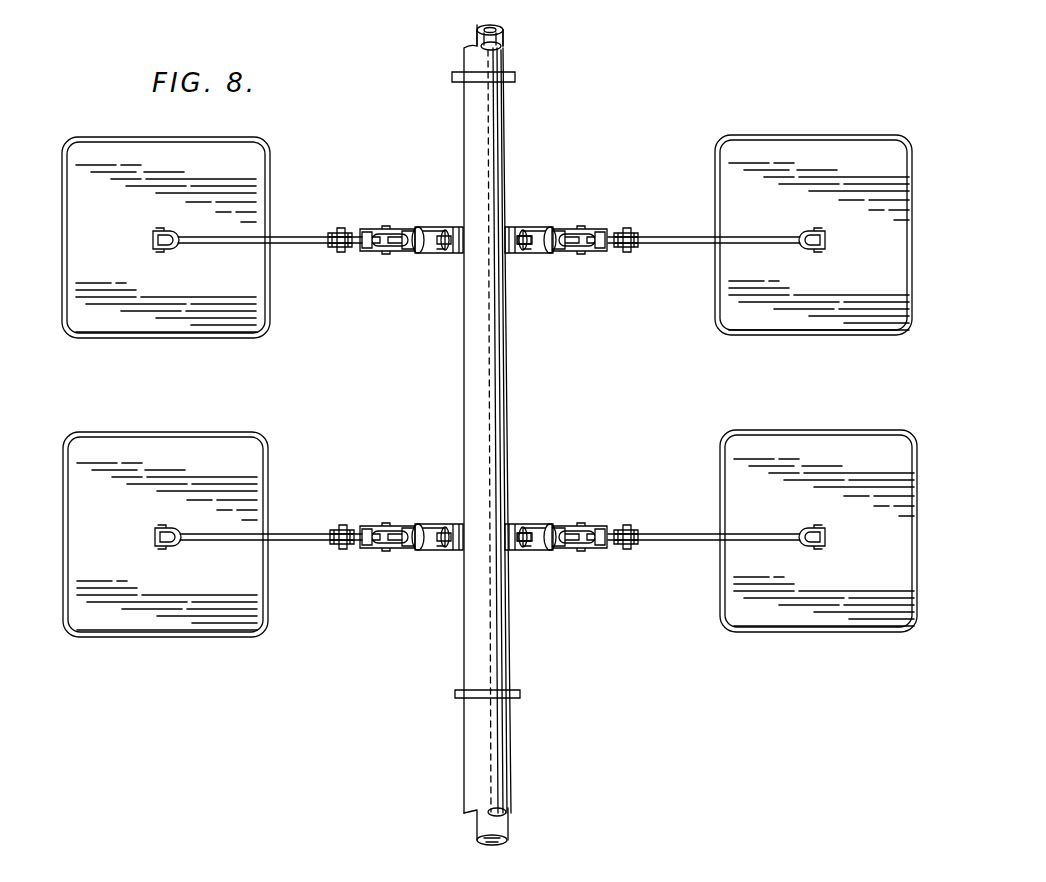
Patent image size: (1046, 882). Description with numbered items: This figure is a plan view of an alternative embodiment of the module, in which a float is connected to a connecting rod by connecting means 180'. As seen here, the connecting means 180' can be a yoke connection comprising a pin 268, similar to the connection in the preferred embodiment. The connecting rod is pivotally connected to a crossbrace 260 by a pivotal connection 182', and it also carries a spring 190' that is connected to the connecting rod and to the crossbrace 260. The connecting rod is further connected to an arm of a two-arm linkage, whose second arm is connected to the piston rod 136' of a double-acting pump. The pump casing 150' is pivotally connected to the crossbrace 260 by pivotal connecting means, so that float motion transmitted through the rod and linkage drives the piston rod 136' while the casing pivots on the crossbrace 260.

The piston rod 136' is at (561, 413).
The pump casing 150' is at (430, 362).
The connecting means 180' is at (203, 203).
The pivotal connection 182' is at (465, 395).
The spring 190' is at (606, 366).
The crossbrace 260 is at (390, 551).
The pin 268 is at (157, 236).